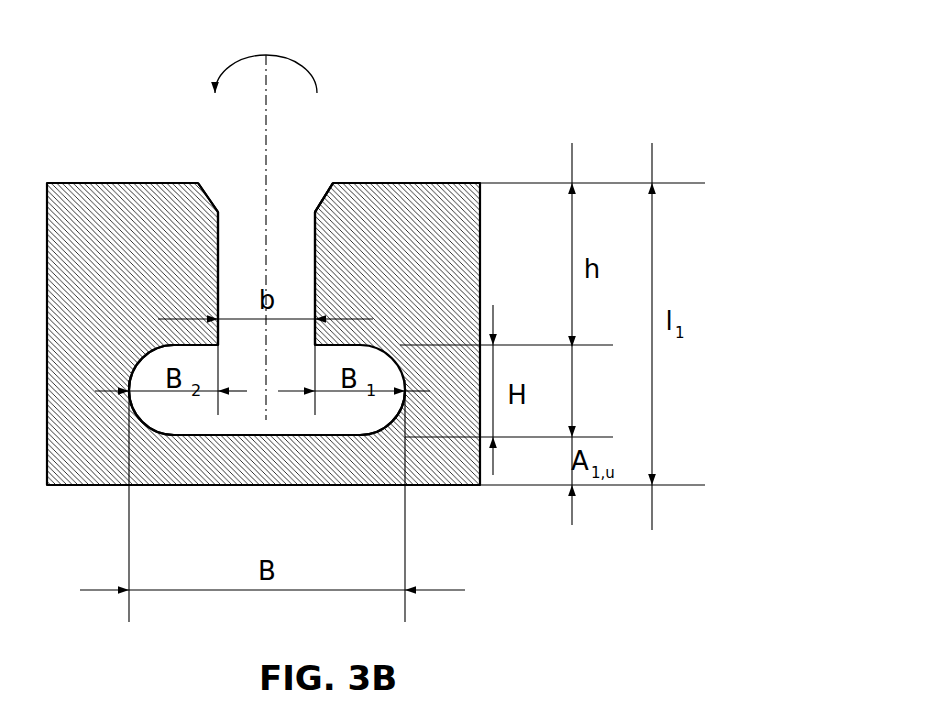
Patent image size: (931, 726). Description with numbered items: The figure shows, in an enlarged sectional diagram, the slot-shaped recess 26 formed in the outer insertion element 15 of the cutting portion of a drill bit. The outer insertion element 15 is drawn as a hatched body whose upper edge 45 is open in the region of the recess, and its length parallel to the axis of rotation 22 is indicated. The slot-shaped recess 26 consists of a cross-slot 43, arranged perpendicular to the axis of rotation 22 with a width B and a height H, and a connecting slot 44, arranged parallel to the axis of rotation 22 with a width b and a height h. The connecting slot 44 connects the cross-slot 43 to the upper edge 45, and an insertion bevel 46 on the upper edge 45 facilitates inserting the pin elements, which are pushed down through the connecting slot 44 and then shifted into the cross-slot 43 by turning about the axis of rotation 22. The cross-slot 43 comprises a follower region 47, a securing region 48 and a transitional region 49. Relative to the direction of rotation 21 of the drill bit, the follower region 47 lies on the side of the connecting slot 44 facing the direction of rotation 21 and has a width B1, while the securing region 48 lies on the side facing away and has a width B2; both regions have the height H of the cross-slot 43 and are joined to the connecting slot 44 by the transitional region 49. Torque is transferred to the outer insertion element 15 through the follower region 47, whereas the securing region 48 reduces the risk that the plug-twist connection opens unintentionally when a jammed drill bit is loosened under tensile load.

The outer insertion element 15 is at (93, 200).
The direction of rotation 21 is at (266, 53).
The axis of rotation 22 is at (272, 261).
The slot-shaped recess 26 is at (210, 156).
The cross-slot 43 is at (148, 342).
The connecting slot 44 is at (244, 210).
The upper edge 45 is at (437, 183).
The insertion bevel 46 is at (316, 189).
The follower region 47 is at (358, 421).
The securing region 48 is at (178, 422).
The transitional region 49 is at (268, 428).